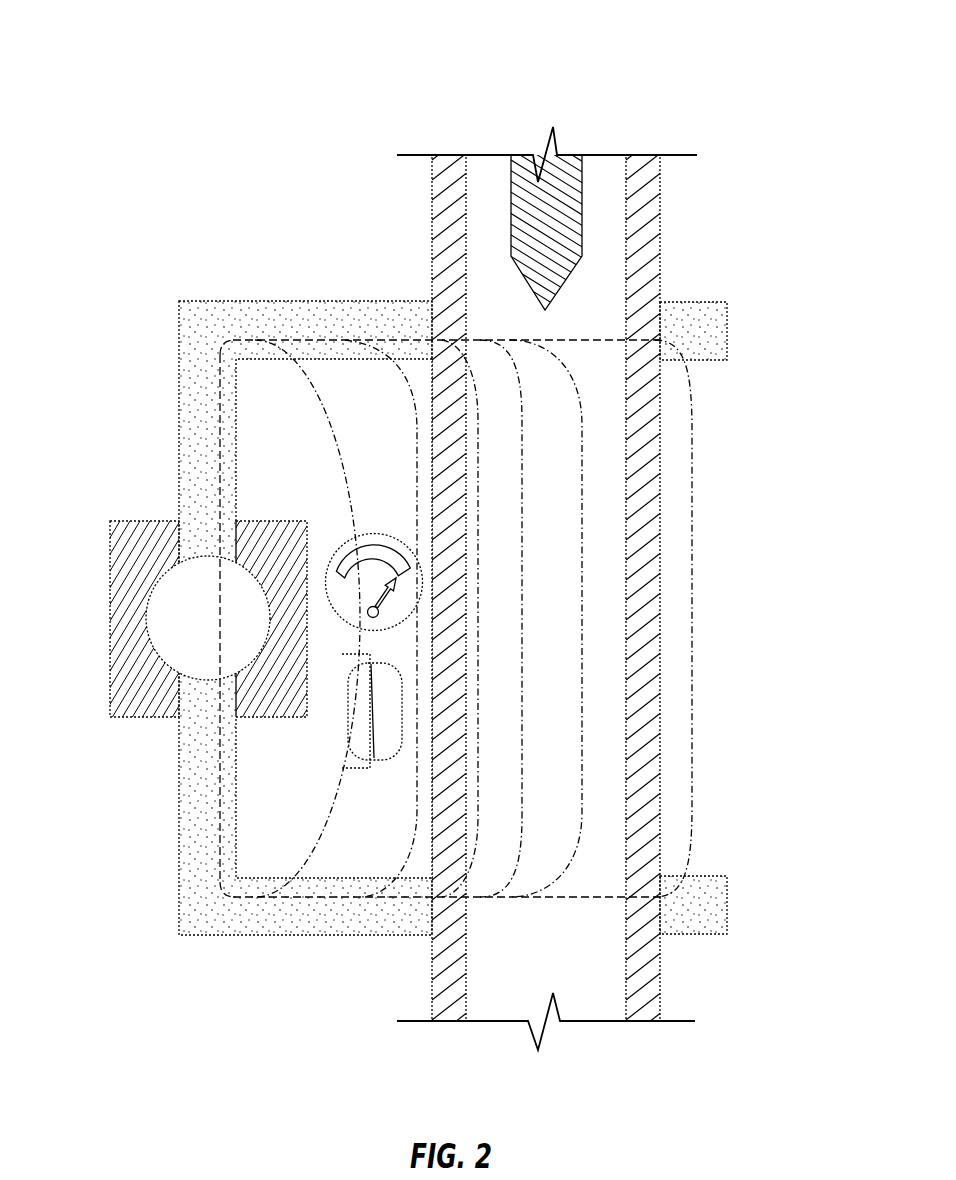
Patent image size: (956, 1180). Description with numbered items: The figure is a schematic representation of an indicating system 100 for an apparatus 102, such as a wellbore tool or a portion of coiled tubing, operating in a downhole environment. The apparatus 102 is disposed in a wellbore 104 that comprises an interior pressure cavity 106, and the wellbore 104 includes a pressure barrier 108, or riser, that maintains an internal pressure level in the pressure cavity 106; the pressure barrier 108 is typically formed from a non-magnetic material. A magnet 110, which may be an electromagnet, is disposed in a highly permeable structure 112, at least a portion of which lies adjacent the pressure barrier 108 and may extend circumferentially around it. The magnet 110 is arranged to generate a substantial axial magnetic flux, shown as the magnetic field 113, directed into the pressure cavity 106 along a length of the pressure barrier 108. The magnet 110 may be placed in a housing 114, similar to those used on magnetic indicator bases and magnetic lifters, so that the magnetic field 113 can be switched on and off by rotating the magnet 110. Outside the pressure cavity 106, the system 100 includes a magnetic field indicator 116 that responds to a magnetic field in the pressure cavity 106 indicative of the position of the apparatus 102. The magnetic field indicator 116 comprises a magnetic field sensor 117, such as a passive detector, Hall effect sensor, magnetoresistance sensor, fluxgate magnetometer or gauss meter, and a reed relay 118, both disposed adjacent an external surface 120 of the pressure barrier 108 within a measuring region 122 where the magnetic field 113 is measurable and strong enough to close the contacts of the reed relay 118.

The indicating system 100 is at (241, 45).
The apparatus 102 is at (582, 182).
The wellbore 104 is at (660, 238).
The pressure cavity 106 is at (490, 175).
The pressure barrier 108 is at (450, 253).
The magnet 110 is at (193, 617).
The highly permeable structure 112 is at (179, 326).
The magnetic field 113 is at (580, 628).
The housing 114 is at (110, 693).
The magnetic field indicator 116 is at (395, 538).
The magnetic field sensor 117 is at (344, 546).
The reed relay 118 is at (350, 748).
The external surface 120 is at (432, 783).
The measuring region 122 is at (335, 690).